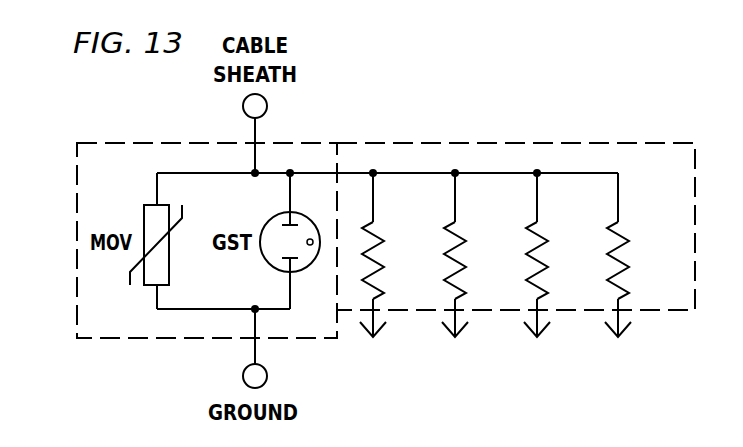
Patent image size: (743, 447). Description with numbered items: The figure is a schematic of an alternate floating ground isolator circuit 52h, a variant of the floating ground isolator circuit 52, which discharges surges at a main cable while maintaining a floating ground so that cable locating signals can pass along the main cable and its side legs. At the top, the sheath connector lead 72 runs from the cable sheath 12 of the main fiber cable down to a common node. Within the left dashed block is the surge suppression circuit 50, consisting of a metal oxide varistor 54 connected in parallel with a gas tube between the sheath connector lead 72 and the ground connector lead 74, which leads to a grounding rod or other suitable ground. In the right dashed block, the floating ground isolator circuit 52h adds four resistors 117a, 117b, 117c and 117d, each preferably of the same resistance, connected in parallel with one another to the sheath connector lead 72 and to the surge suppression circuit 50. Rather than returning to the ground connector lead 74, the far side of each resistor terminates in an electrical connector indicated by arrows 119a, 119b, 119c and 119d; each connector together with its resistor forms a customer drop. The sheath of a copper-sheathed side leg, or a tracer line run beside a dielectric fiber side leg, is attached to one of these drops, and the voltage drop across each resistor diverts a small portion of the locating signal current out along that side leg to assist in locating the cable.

The floating ground isolator circuit 52h is at (137, 142).
The cable sheath 12 is at (244, 103).
The sheath connector lead 72 is at (257, 129).
The metal oxide varistor (MOV) 54 is at (142, 211).
The floating ground isolator circuit 52 is at (273, 262).
The surge suppression circuit 50 is at (147, 310).
The ground connector lead 74 is at (256, 350).
The resistor 117a is at (438, 219).
The resistor 117b is at (521, 219).
The resistor 117c is at (603, 219).
The resistor 117d is at (684, 219).
The electrical connector 119a is at (438, 374).
The electrical connector 119b is at (521, 374).
The electrical connector 119c is at (603, 374).
The electrical connector 119d is at (684, 374).